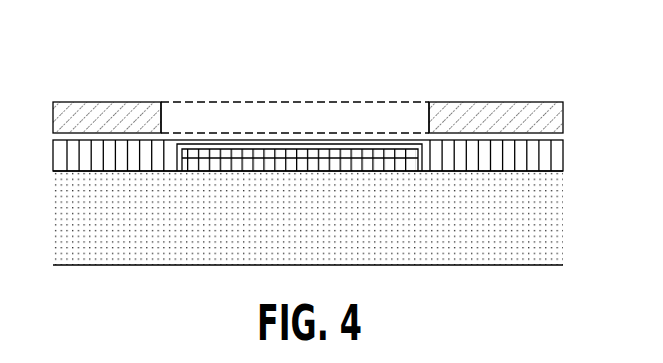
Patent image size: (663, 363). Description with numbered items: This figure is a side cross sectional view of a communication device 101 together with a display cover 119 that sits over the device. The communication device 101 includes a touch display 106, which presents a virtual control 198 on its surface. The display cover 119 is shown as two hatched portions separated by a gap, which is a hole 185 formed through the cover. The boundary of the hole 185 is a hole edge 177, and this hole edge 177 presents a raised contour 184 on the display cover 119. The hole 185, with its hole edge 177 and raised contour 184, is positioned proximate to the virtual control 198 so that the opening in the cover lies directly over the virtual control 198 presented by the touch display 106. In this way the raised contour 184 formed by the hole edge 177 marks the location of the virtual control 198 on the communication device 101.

The communication device 101 is at (293, 216).
The touch display 106 is at (477, 157).
The display cover 119 is at (465, 102).
The hole edge 177 is at (161, 120).
The raised contour 184 is at (143, 102).
The hole 185 is at (269, 118).
The virtual control 198 is at (403, 153).